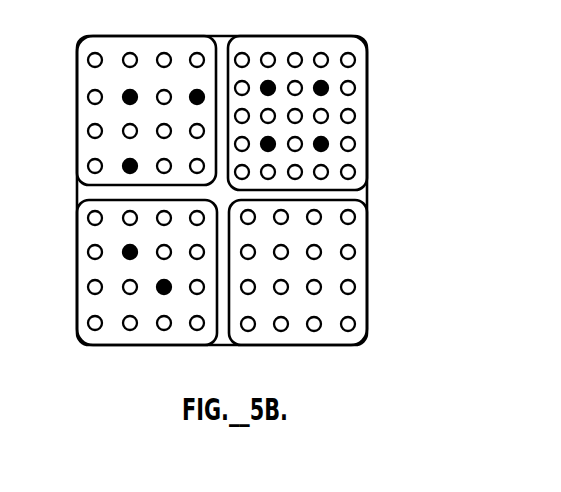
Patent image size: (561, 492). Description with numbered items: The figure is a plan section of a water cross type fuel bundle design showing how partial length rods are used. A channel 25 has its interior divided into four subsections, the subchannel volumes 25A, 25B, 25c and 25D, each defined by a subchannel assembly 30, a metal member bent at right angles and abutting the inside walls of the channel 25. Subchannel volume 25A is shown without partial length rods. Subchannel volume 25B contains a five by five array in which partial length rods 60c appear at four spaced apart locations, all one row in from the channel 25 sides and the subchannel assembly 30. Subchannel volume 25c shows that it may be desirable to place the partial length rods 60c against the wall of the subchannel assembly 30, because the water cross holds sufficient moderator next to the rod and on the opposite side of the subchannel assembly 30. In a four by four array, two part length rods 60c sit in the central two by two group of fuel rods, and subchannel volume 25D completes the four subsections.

The channel 25 is at (368, 288).
The subchannel volume 25A is at (337, 303).
The subchannel volume 25B is at (350, 184).
The subchannel volume 25c is at (145, 60).
The subchannel volume 25D is at (150, 337).
The subchannel assembly 30 is at (221, 62).
The partial length rods 60c is at (129, 160).